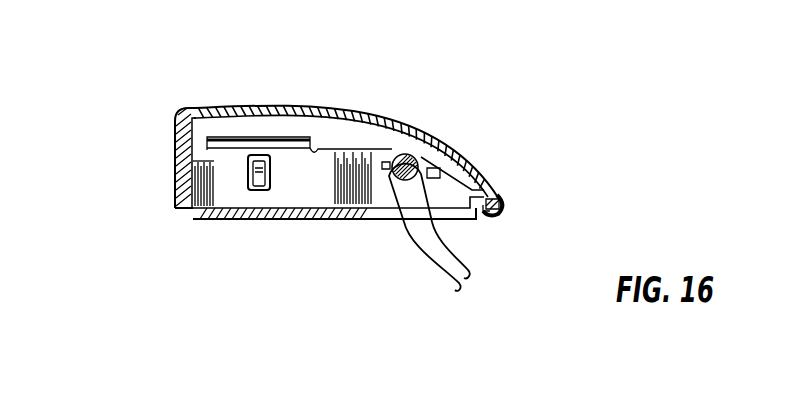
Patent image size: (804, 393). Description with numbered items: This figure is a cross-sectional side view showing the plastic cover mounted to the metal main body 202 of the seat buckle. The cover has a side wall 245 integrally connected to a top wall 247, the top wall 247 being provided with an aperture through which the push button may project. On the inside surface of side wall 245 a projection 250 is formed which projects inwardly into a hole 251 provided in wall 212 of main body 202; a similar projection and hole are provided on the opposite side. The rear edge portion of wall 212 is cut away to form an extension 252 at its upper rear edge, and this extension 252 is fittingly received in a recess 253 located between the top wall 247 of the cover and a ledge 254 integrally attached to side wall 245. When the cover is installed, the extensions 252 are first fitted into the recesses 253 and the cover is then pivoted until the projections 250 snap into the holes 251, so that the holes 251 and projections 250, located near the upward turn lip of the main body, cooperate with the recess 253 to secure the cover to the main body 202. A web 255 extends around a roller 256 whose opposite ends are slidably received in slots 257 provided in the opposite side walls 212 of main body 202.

The wall 212 is at (210, 183).
The side wall 245 is at (340, 135).
The top wall 247 is at (387, 117).
The projection 250 is at (259, 193).
The hole 251 is at (250, 176).
The main body 202 is at (323, 220).
The roller 256 is at (418, 153).
The slots 257 is at (438, 167).
The web 255 is at (425, 247).
The extension 252 is at (487, 185).
The recess 253 is at (507, 199).
The ledge 254 is at (485, 206).